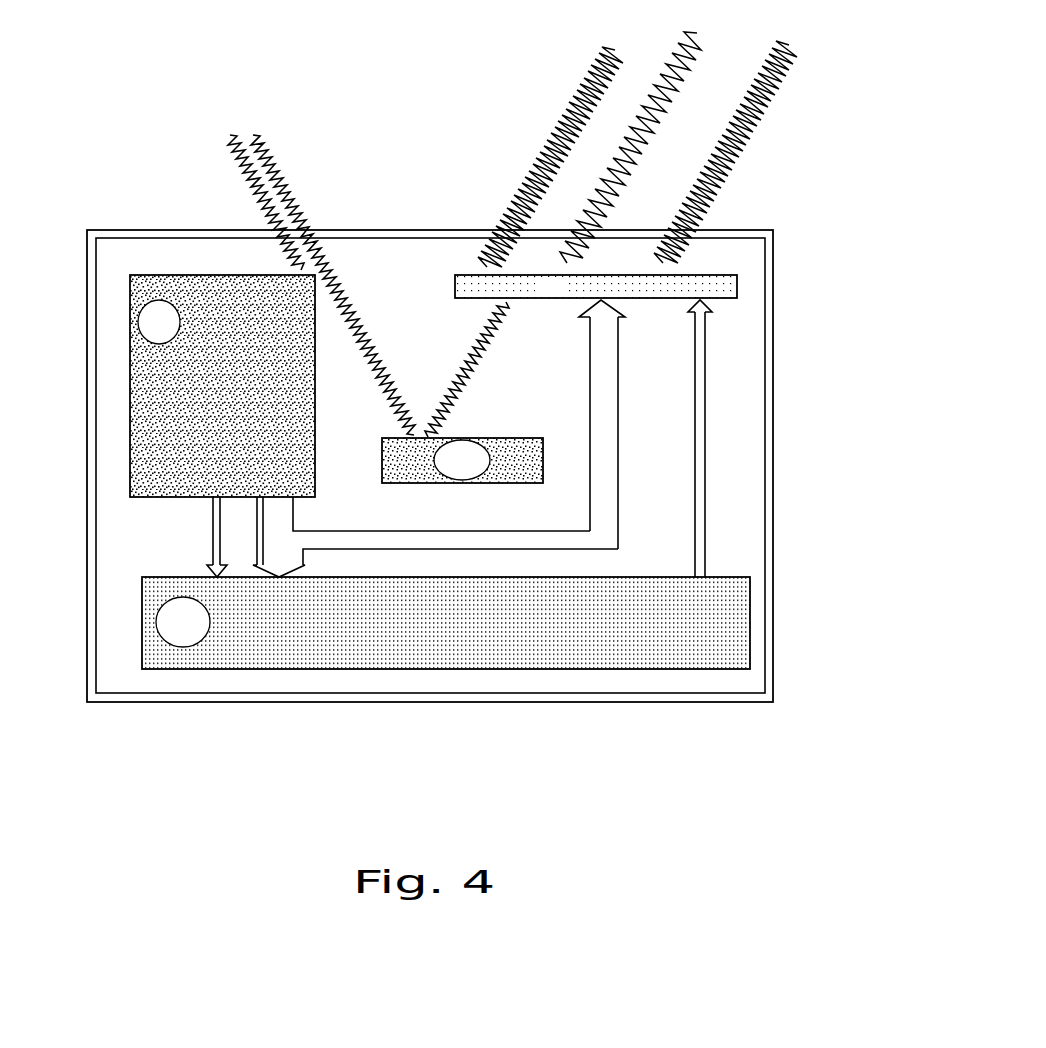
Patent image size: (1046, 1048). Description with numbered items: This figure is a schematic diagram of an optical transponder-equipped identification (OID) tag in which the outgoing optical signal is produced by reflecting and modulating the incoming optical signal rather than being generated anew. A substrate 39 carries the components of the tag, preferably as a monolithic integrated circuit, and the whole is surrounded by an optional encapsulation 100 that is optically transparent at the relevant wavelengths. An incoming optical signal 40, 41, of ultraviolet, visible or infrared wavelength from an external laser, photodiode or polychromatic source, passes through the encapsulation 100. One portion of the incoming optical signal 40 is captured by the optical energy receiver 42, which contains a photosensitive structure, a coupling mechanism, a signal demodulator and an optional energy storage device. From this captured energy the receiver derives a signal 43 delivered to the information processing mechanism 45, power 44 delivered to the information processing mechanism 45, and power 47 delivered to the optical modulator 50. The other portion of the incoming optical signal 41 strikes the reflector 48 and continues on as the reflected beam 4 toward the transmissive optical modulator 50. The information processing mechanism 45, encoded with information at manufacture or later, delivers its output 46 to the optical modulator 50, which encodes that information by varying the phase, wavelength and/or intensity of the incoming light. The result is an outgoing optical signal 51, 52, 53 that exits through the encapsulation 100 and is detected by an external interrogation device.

The substrate 39 is at (556, 700).
The encapsulation 100 is at (740, 398).
The incoming optical signal 40 is at (250, 196).
The incoming optical signal 41 is at (302, 189).
The optical energy receiver 42 is at (222, 386).
The signal 43 is at (200, 552).
The power 44 is at (435, 537).
The information processing mechanism 45 is at (446, 623).
The output 46 is at (720, 515).
The power 47 is at (602, 424).
The reflector 48 is at (462, 460).
The optical modulator 50 is at (596, 287).
The outgoing optical signal 51 is at (560, 138).
The outgoing optical signal 52 is at (646, 136).
The outgoing optical signal 53 is at (730, 136).
The reflected beam 4 is at (492, 380).